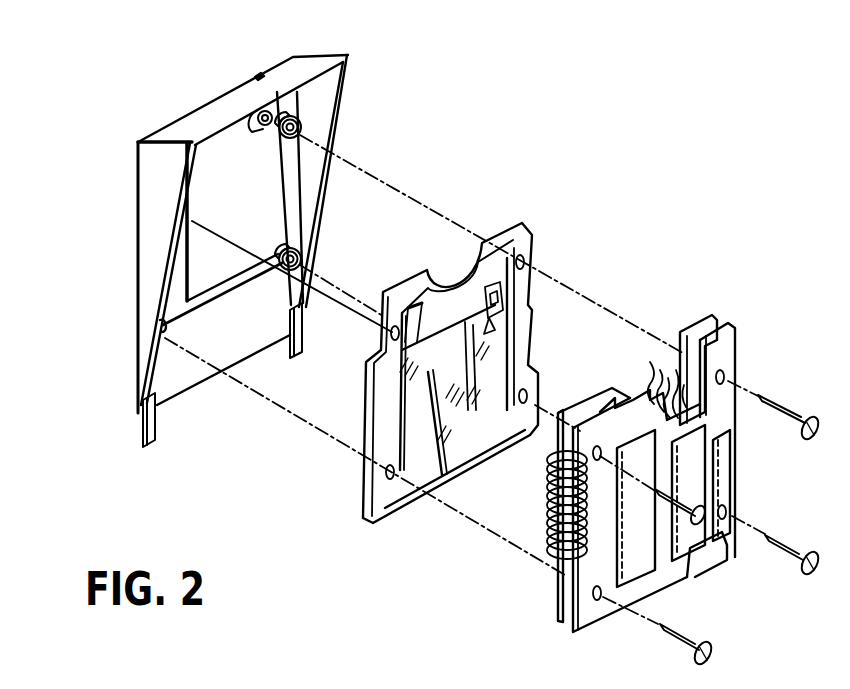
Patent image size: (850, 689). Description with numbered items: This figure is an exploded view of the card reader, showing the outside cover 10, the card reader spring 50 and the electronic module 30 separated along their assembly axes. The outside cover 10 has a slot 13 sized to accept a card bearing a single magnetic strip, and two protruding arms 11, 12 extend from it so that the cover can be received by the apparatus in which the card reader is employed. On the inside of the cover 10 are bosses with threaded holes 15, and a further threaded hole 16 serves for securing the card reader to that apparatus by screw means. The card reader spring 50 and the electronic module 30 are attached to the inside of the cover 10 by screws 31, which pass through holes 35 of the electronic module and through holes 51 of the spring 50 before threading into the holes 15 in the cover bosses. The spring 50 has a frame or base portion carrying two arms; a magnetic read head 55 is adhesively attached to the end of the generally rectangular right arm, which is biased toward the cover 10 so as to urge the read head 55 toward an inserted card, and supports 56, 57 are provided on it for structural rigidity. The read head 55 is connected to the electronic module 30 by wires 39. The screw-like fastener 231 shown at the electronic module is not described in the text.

The outside cover 10 is at (137, 146).
The protruding arm 11 is at (153, 447).
The protruding arm 12 is at (297, 358).
The slot 13 is at (214, 174).
The threaded holes 15 is at (297, 136).
The threaded hole 16 is at (249, 134).
The card reader spring 50 is at (367, 520).
The holes 51 is at (527, 257).
The magnetic read head 55 is at (502, 298).
The support 56 is at (497, 306).
The support 57 is at (490, 324).
The wires 39 is at (667, 353).
The holes 35 is at (725, 376).
The screws 31 is at (768, 398).
The pin screw 231 is at (686, 503).
The electronic module 30 is at (558, 620).